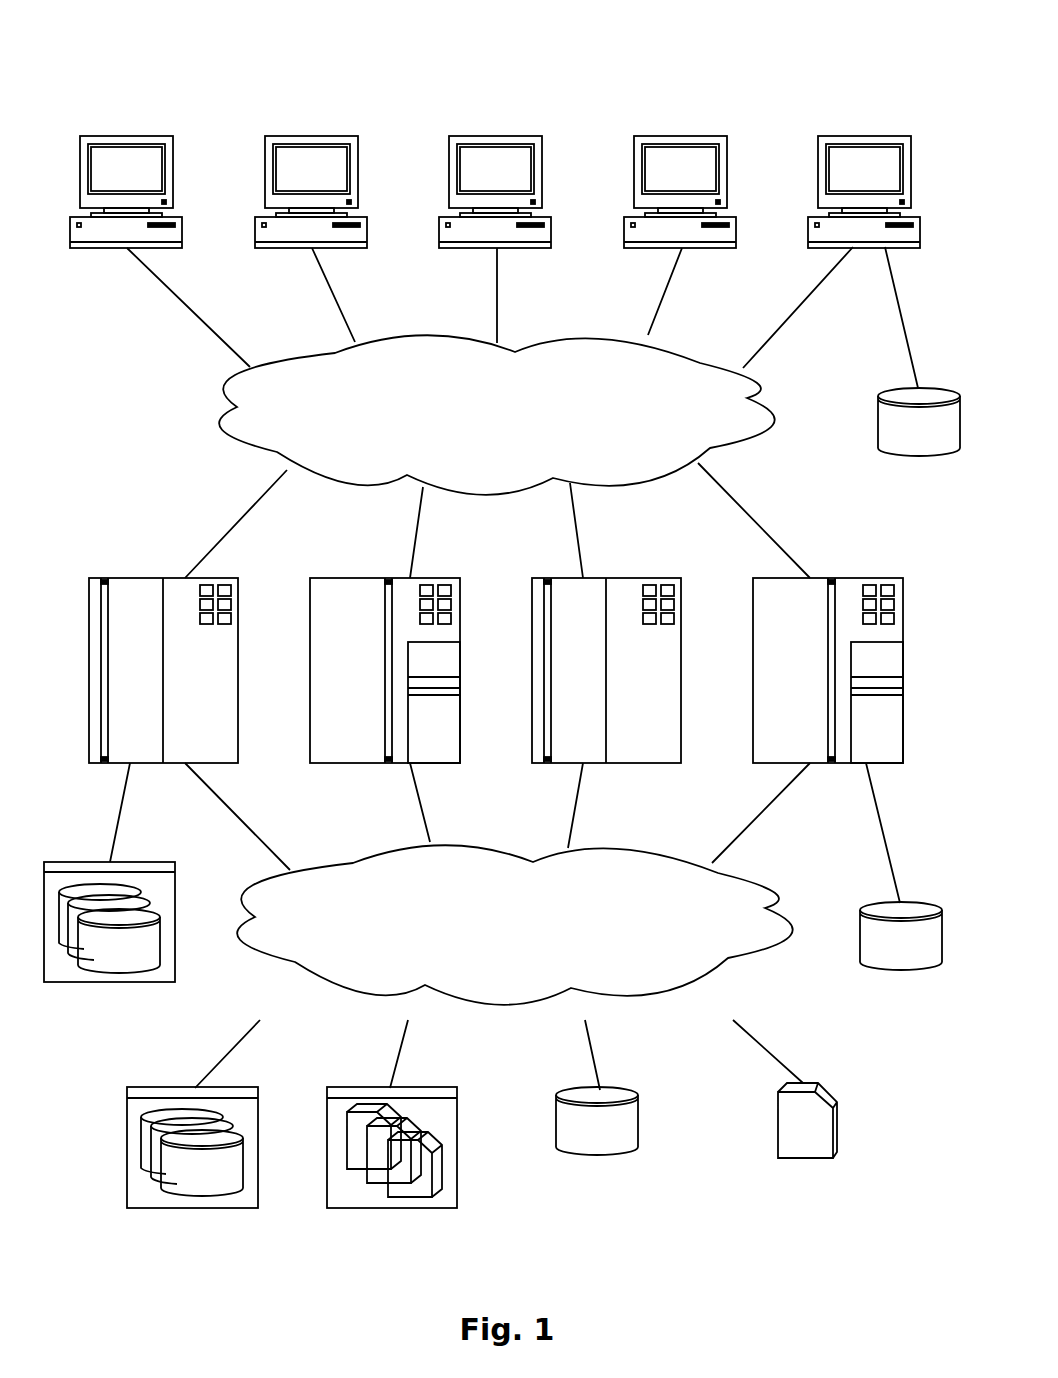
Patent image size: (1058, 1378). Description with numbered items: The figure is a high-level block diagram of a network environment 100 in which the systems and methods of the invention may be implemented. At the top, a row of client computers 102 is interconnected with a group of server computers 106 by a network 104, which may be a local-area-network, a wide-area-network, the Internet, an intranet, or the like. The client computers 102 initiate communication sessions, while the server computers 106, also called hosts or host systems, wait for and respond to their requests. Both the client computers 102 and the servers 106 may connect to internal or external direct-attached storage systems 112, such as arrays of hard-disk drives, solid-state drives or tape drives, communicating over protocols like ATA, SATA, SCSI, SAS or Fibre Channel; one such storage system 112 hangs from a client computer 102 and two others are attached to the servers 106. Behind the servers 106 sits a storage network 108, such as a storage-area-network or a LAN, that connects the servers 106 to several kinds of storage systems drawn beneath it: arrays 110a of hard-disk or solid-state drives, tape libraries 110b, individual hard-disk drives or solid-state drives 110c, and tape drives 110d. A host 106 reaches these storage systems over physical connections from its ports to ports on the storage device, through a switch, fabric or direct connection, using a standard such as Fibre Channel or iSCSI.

The network environment 100 is at (205, 68).
The client computers 102 is at (110, 179).
The network 104 is at (479, 439).
The server computers 106 is at (119, 679).
The storage network 108 is at (497, 948).
The arrays 110a is at (190, 1208).
The tape libraries 110b is at (390, 1208).
The individual hard-disk drives or solid-state drives 110c is at (597, 1152).
The tape drives 110d is at (805, 1158).
The direct-attached storage systems 112 is at (920, 455).